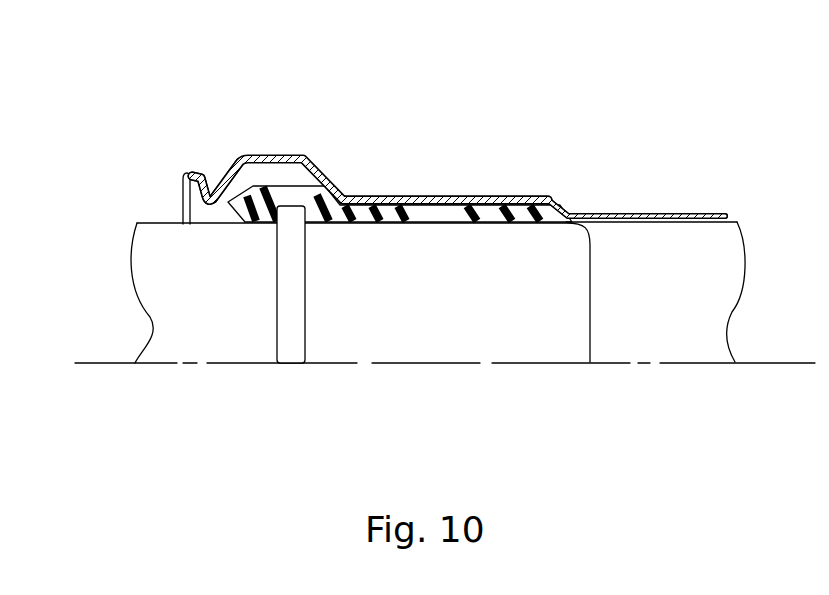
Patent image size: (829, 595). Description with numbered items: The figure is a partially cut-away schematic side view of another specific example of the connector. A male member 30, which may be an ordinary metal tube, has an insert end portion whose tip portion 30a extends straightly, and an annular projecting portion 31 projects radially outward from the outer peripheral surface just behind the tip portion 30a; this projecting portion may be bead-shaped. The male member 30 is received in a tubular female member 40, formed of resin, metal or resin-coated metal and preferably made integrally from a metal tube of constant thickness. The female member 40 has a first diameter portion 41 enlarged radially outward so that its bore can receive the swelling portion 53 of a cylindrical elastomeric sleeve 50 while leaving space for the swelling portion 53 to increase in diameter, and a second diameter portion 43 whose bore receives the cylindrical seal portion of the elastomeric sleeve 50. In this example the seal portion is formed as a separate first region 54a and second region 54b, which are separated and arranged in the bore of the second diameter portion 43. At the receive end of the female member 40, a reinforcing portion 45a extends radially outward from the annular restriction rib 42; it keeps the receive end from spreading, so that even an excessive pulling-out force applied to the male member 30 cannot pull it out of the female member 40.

The male member 30 is at (422, 327).
The tip portion 30a is at (430, 338).
The annular projecting portion 31 is at (290, 337).
The female member 40 is at (390, 227).
The first diameter portion 41 is at (251, 155).
The annular restriction rib 42 is at (226, 166).
The second diameter portion 43 is at (455, 196).
The reinforcing portion 45a is at (200, 174).
The elastomeric sleeve 50 is at (297, 155).
The swelling portion 53 is at (400, 215).
The first region 54a is at (380, 224).
The second region 54b is at (500, 224).